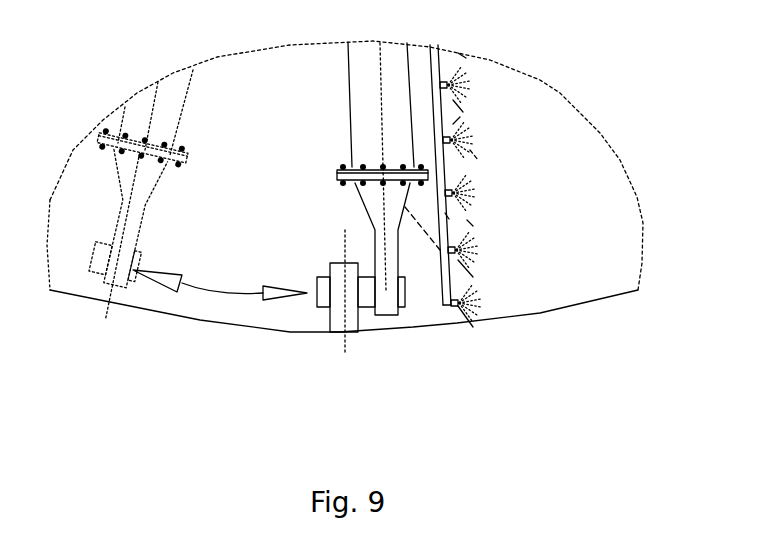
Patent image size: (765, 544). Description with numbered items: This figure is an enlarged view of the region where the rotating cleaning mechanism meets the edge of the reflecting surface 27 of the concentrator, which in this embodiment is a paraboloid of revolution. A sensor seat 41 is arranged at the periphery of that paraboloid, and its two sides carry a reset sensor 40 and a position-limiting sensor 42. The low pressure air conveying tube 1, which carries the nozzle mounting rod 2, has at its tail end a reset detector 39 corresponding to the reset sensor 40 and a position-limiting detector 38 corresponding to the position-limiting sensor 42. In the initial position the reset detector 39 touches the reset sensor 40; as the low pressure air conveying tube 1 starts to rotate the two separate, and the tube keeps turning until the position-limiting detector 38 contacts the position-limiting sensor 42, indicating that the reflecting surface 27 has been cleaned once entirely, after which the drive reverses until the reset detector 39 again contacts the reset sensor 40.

The low pressure air conveying tube 1 is at (458, 257).
The nozzle mounting rod 2 is at (450, 220).
The reflecting surface of a concentrator 27 is at (445, 307).
The position-limiting detector 38 is at (403, 310).
The reset detector 39 is at (375, 315).
The reset sensor 40 is at (360, 307).
The sensor seat 41 is at (340, 313).
The position-limiting sensor 42 is at (318, 305).